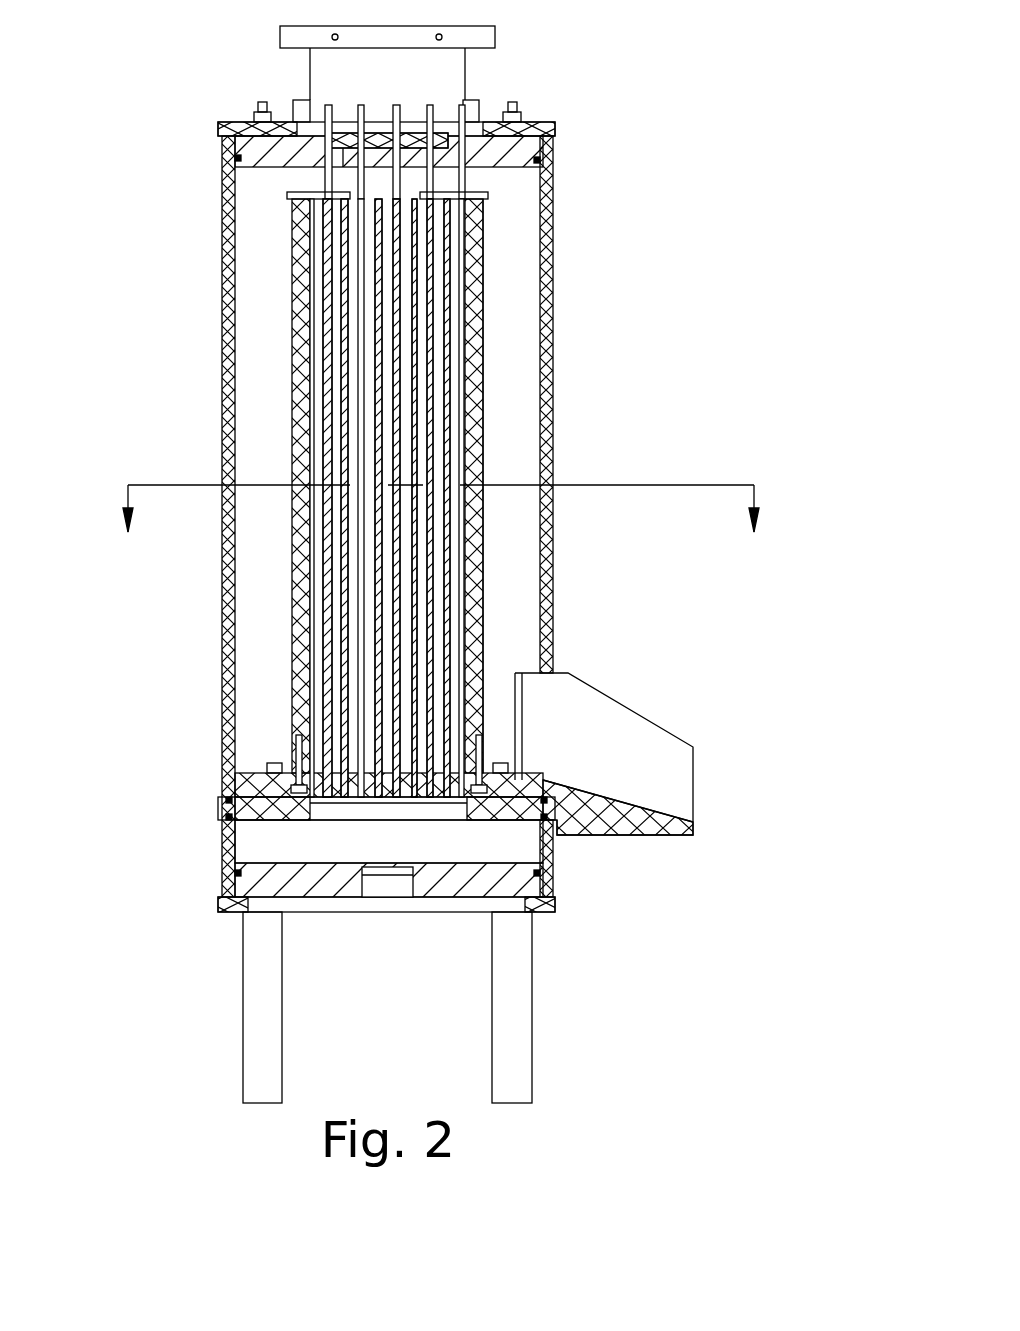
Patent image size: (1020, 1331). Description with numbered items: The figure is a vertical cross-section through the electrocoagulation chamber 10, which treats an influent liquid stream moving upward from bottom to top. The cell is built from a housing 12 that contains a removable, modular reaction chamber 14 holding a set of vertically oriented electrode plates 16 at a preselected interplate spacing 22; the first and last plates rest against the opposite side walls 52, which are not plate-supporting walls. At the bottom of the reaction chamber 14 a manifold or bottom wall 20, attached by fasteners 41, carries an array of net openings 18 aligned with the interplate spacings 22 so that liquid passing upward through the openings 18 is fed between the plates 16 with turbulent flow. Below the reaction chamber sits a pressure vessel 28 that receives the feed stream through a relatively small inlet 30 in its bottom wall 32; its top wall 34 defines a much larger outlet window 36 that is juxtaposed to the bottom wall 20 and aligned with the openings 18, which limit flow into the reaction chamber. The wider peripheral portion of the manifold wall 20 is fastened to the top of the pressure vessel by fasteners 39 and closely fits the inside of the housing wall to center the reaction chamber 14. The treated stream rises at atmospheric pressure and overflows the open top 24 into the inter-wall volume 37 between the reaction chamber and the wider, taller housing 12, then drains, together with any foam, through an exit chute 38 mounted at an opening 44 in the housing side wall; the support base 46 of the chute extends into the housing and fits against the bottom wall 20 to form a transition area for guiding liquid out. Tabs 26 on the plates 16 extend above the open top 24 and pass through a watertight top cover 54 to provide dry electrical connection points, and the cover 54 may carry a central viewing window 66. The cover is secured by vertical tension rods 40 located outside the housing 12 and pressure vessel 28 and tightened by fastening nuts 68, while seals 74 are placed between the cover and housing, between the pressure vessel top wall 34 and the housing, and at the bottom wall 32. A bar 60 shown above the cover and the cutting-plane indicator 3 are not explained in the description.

The electrocoagulation chamber 10 is at (365, 485).
The housing 12 is at (553, 293).
The reaction chamber 14 is at (487, 578).
The electrode plates 16 is at (362, 627).
The net openings 18 is at (423, 800).
The bottom wall (manifold wall) 20 is at (255, 772).
The interplate spacings 22 is at (411, 438).
The open top 24 is at (403, 198).
The tabs 26 is at (395, 106).
The pressure vessel 28 is at (243, 848).
The inlet 30 is at (382, 900).
The bottom wall of pressure vessel 32 is at (240, 893).
The top wall of pressure vessel 34 is at (222, 806).
The outlet window 36 is at (445, 810).
The inter-wall volume 37 is at (258, 380).
The exit chute 38 is at (660, 815).
The fasteners 39 is at (272, 762).
The dry connectors (vertical tension rods) 40 is at (514, 112).
The fasteners 41 is at (300, 800).
The opening 44 is at (567, 672).
The support base 46 is at (551, 778).
The side walls 52 is at (292, 297).
The top cover 54 is at (558, 147).
The lifting bar 60 is at (282, 30).
The viewing window 66 is at (408, 134).
The fastening nuts 68 is at (260, 114).
The seals 74 is at (553, 170).
The section line 3- 3 is at (441, 526).